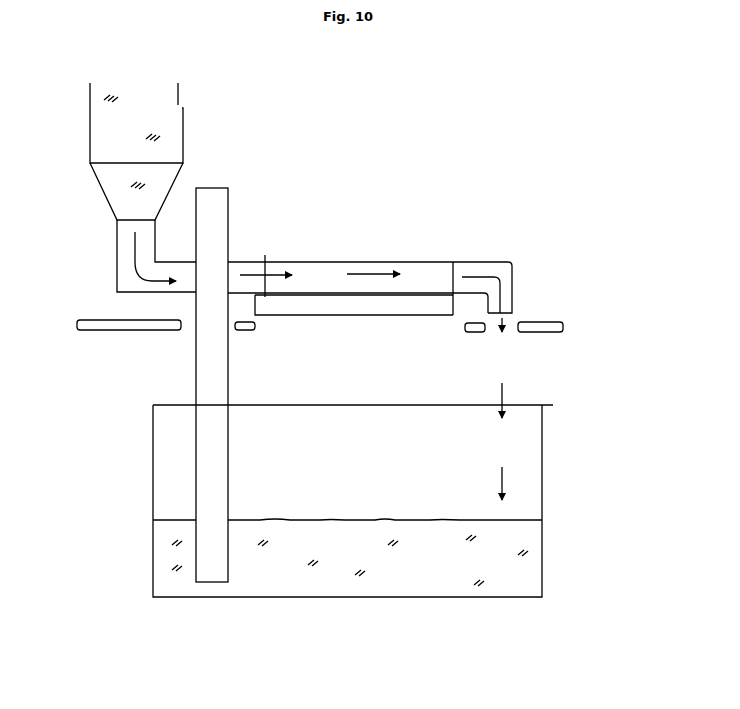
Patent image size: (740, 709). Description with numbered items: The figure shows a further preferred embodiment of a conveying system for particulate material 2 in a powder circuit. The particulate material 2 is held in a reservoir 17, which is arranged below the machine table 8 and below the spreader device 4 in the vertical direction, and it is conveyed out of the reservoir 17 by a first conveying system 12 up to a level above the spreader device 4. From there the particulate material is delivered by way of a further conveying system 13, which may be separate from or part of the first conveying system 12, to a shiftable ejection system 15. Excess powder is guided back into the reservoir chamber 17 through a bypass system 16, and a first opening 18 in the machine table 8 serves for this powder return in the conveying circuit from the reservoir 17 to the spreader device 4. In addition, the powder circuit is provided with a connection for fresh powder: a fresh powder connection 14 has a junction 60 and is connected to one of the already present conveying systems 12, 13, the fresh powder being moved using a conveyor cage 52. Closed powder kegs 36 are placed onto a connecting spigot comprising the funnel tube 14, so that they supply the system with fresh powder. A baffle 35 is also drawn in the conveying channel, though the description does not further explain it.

The particulate material 2 is at (523, 560).
The spreader device 4 is at (453, 307).
The machine table 8 is at (85, 317).
The first conveying system 12 is at (208, 478).
The further conveying system 13 is at (153, 277).
The fresh powder connection 14 is at (115, 182).
The shiftable ejection system 15 is at (327, 258).
The bypass system 16 is at (513, 302).
The reservoir 17 is at (543, 462).
The first opening 18 is at (358, 328).
The baffle 35 is at (275, 265).
The powder keg 36 is at (158, 110).
The conveyor cage 52 is at (349, 264).
The junction 60 is at (98, 200).